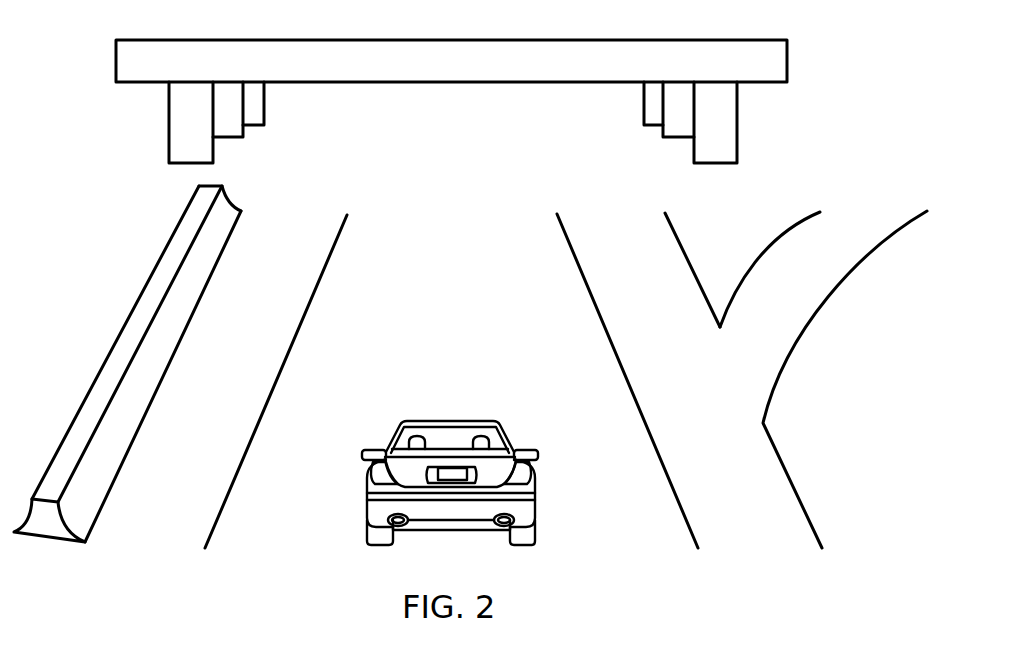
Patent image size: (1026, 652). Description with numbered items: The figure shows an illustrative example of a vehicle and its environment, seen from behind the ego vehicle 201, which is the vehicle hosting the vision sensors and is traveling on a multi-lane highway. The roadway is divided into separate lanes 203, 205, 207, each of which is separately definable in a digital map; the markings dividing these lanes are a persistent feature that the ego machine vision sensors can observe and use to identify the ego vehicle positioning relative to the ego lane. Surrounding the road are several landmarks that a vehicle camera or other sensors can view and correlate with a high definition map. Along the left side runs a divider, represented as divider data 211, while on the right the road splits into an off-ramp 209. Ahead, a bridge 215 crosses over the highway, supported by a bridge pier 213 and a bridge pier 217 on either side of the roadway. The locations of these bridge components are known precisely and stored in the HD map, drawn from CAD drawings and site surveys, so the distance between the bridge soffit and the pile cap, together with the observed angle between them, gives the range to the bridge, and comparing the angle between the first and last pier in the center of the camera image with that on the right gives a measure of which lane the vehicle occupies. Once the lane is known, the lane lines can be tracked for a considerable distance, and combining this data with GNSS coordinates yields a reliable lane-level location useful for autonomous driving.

The ego vehicle 201 is at (503, 422).
The lane 203 is at (477, 329).
The lane 205 is at (686, 329).
The lane 207 is at (262, 329).
The off-ramp 209 is at (813, 291).
The divider 211 is at (175, 237).
The bridge pier 213 is at (168, 127).
The bridge 215 is at (787, 58).
The bridge pier 217 is at (737, 118).